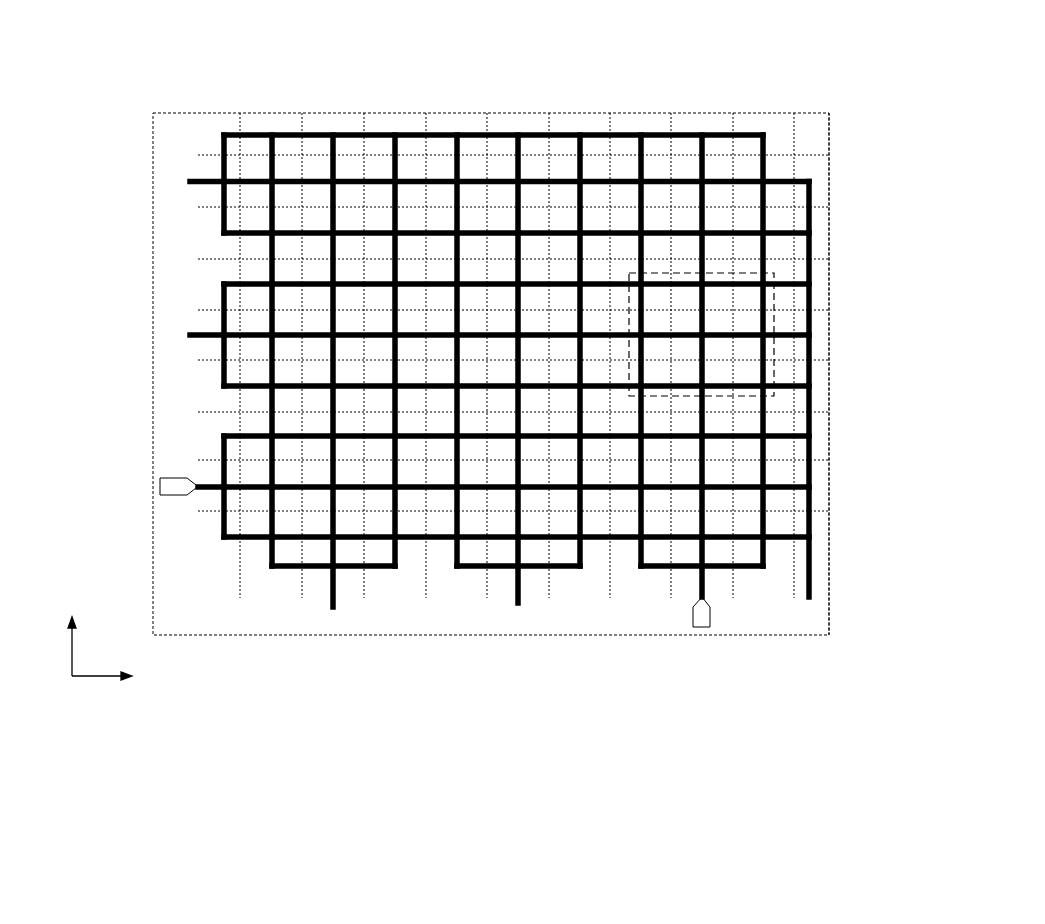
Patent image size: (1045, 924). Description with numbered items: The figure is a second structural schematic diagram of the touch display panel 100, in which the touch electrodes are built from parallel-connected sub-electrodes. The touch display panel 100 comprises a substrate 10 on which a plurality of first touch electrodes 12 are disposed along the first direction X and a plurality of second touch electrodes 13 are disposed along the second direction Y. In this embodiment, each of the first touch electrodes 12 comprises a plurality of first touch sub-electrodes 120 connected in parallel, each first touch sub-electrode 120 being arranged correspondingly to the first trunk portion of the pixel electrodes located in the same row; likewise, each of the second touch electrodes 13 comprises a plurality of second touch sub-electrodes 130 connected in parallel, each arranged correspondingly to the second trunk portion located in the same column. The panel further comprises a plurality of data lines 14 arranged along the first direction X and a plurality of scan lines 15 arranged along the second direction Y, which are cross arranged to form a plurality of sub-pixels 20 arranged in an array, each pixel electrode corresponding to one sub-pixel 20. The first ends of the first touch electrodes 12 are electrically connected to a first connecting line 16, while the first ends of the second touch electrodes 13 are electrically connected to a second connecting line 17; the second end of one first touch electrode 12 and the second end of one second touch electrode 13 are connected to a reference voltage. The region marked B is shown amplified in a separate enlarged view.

The touch display panel 100 is at (176, 50).
The substrate 10 is at (265, 113).
The first touch electrode 12 is at (72, 145).
The first touch sub-electrode 120 is at (252, 138).
The second touch electrode 13 is at (578, 693).
The second touch sub-electrode 130 is at (460, 552).
The data line 14 is at (817, 156).
The scan line 15 is at (828, 182).
The first connecting line 16 is at (812, 222).
The second connecting line 17 is at (382, 135).
The sub-pixel 20 is at (785, 168).
The region B is at (774, 323).